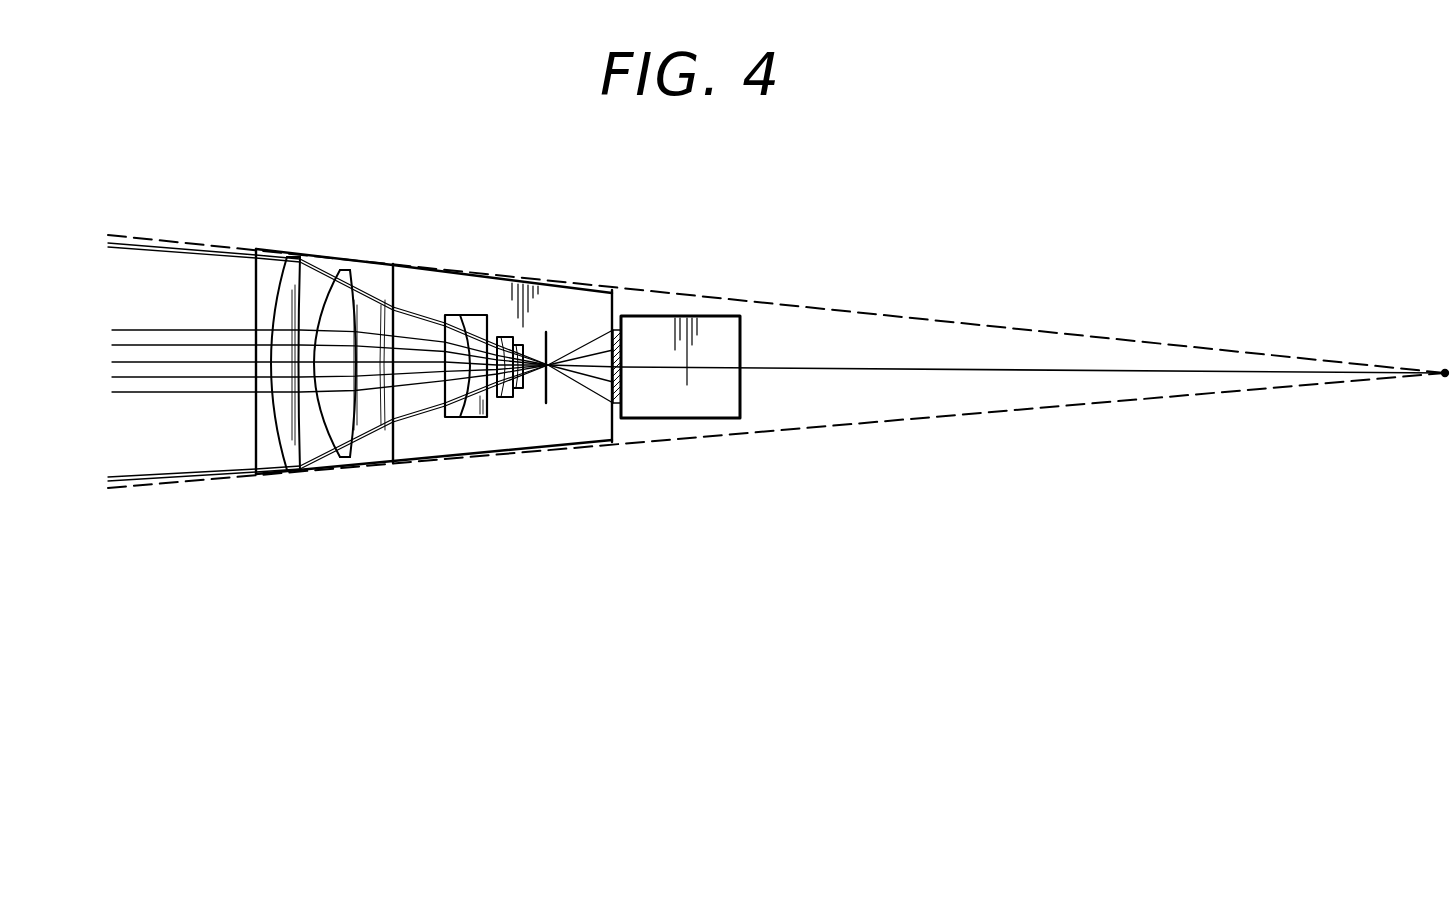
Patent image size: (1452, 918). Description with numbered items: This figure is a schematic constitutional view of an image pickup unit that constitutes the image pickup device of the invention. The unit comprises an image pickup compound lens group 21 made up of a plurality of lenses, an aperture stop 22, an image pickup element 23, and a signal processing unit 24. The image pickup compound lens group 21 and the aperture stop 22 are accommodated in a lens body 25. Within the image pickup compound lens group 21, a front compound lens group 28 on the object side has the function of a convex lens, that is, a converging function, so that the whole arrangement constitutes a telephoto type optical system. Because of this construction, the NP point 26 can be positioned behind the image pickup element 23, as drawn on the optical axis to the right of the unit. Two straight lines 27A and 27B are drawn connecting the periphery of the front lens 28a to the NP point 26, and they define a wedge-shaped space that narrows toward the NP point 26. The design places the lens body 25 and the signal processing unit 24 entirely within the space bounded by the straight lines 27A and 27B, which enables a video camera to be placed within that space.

The image pickup compound lens group 21 is at (270, 495).
The aperture stop 22 is at (553, 333).
The image pickup element 23 is at (617, 405).
The signal processing unit 24 is at (723, 394).
The lens body 25 is at (468, 270).
The NP point 26 is at (1443, 377).
The straight line 27A is at (207, 243).
The straight line 27B is at (183, 486).
The front compound lens group 28 is at (311, 368).
The front lens 28a is at (267, 450).